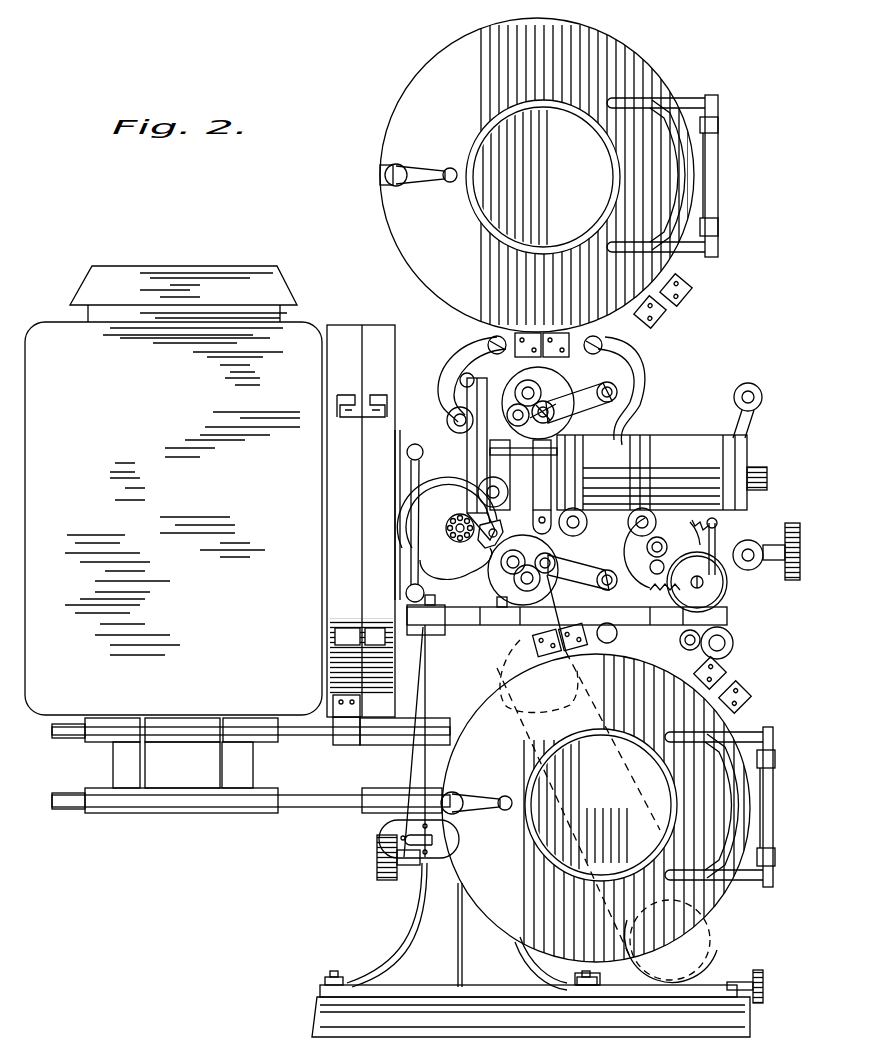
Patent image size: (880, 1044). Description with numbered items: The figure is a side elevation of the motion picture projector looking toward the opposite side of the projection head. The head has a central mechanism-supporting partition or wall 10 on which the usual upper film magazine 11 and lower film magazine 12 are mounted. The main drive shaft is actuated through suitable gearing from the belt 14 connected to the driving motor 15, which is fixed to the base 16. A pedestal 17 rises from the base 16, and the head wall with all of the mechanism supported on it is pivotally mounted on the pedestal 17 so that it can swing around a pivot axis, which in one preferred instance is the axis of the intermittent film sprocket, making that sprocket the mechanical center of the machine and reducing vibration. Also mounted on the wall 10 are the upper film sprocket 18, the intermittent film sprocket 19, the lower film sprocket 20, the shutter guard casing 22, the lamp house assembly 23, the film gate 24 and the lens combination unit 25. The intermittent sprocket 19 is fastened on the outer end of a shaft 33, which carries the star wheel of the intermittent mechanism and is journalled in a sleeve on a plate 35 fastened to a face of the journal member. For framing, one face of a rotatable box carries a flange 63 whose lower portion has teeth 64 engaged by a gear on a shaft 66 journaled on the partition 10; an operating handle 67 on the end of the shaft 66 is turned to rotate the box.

The mechanism-supporting partition or wall 10 is at (618, 393).
The upper film magazine 11 is at (549, 175).
The lower film magazine 12 is at (596, 807).
The belt 14 is at (672, 850).
The driving motor 15 is at (715, 934).
The base 16 is at (537, 1003).
The pedestal 17 is at (457, 926).
The upper film sprocket 18 is at (487, 362).
The intermittent film sprocket 19 is at (450, 528).
The lower film sprocket 20 is at (512, 612).
The shutter guard casing 22 is at (345, 332).
The lamp house assembly 23 is at (165, 333).
The film gate 24 is at (472, 455).
The lens combination unit 25 is at (670, 443).
The shaft 33 is at (440, 545).
The plate 35 is at (432, 505).
The flange 63 is at (627, 540).
The teeth 64 is at (673, 565).
The shaft 66 is at (708, 592).
The operating handle 67 is at (717, 582).